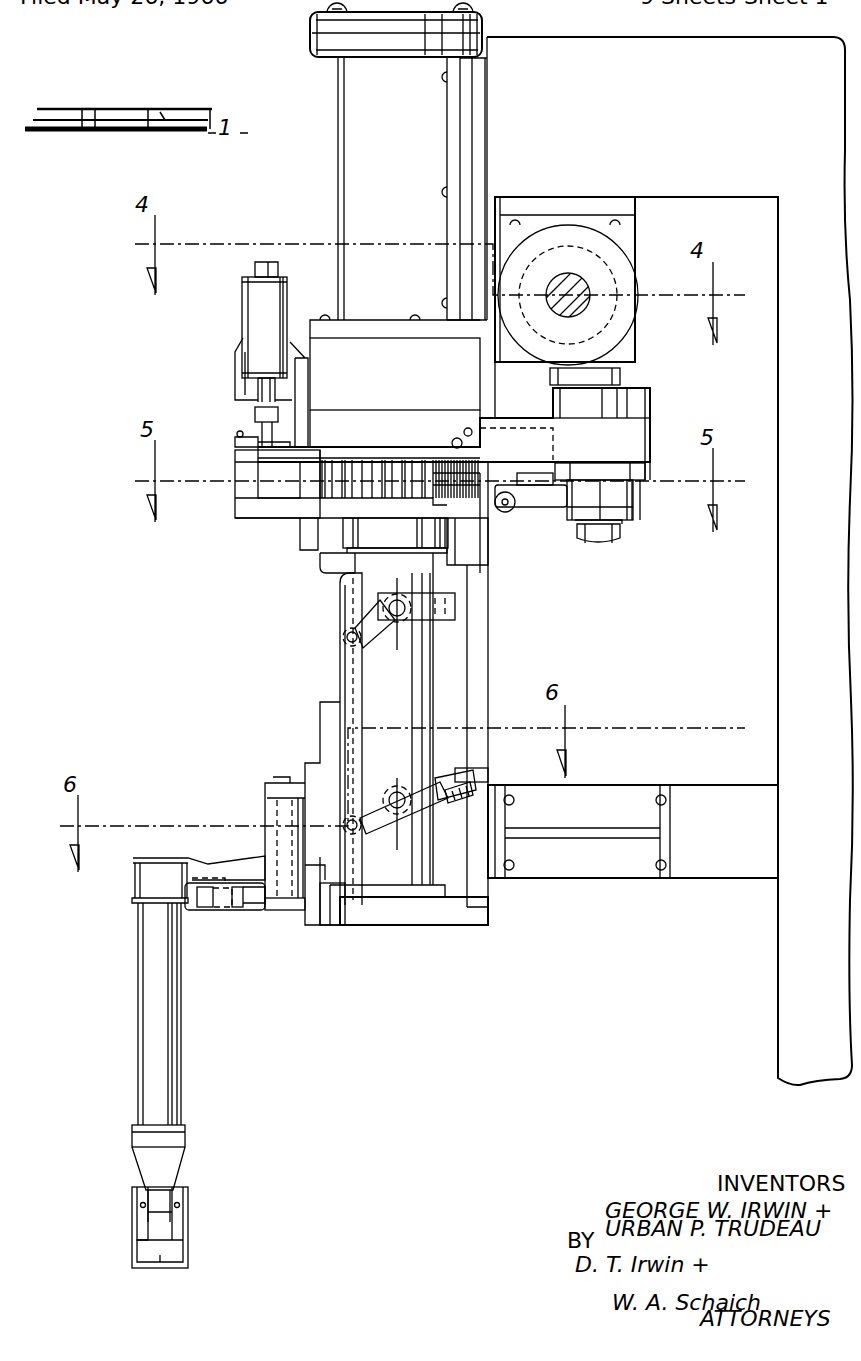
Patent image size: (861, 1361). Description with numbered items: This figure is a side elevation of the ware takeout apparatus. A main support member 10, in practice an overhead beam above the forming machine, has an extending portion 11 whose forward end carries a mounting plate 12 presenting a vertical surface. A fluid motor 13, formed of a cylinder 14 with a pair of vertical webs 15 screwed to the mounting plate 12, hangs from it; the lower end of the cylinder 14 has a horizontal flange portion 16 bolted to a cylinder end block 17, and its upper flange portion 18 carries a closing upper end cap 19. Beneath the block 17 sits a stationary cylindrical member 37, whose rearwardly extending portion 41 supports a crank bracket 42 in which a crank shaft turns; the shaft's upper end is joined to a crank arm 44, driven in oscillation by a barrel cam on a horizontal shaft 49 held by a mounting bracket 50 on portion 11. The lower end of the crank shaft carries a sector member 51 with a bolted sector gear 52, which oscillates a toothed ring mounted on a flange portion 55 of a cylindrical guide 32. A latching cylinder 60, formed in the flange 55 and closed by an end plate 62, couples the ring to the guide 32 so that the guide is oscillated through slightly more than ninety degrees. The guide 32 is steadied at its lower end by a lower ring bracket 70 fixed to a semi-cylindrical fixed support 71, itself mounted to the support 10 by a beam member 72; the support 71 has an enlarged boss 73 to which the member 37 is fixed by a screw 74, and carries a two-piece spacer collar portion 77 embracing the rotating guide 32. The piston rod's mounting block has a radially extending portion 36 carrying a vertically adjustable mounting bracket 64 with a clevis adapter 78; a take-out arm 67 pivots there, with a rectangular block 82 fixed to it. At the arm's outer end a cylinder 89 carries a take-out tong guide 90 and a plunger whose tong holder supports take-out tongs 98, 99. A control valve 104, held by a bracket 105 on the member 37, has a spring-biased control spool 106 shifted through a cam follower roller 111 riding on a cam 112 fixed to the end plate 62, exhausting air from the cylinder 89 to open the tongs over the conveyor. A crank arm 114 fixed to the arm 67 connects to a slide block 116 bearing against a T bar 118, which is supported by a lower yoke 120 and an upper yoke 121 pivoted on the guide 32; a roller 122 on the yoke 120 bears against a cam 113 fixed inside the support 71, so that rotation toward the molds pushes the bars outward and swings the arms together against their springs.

The main support member 10 is at (748, 970).
The extending portion of the main support 11 is at (606, 131).
The mounting plate 12 is at (478, 97).
The fluid motor 13 is at (318, 106).
The cylinder 14 is at (357, 146).
The vertical webs 15 is at (452, 203).
The horizontal flange portion 16 is at (322, 318).
The cylinder end block 17 is at (405, 386).
The upper flange portion 18 is at (318, 42).
The upper end cap 19 is at (318, 22).
The cylindrical guide 32 is at (400, 688).
The radially extending portion of the mounting block 36 is at (325, 704).
The cylindrical member 37 is at (487, 412).
The rearwardly extending portion 41 is at (540, 423).
The crank bracket 42 is at (645, 466).
The crank arm 44 is at (622, 377).
The horizontal shaft 49 is at (572, 290).
The mounting bracket 50 is at (623, 237).
The sector member 51 is at (553, 497).
The sector gear 52 is at (508, 512).
The flange portion of the cylindrical guide 55 is at (305, 505).
The cylinder 60 is at (270, 490).
The end closing plate 62 is at (258, 512).
The mounting bracket 64 is at (313, 778).
The ware take-out arm 67 is at (223, 860).
The lower ring bracket 70 is at (475, 913).
The semi-cylindrical fixed support 71 is at (482, 652).
The beam member 72 is at (630, 797).
The enlarged boss 73 is at (480, 534).
The screw 74 is at (460, 438).
The spacer collar portion 77 is at (352, 528).
The clevis adapter 78 is at (238, 903).
The rectangular block 82 is at (200, 897).
The cylinder 89 is at (178, 1050).
The take-out tong guide 90 is at (176, 1150).
The take-out tong 98 is at (182, 1233).
The take-out tong 99 is at (142, 1232).
The control valve 104 is at (257, 299).
The bracket 105 is at (248, 355).
The control spool 106 is at (260, 387).
The cam follower roller 111 is at (258, 416).
The cam 112 is at (237, 441).
The cam 113 is at (470, 772).
The crank arm 114 is at (300, 887).
The slide block 116 is at (350, 900).
The T bar 118 is at (340, 655).
The lower yoke 120 is at (447, 802).
The upper yoke 121 is at (458, 607).
The roller 122 is at (468, 790).